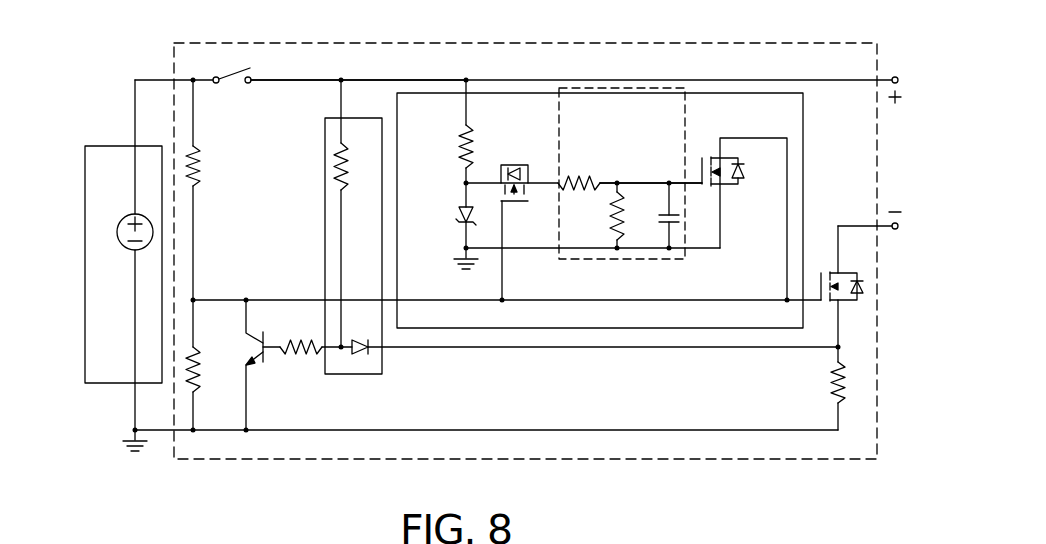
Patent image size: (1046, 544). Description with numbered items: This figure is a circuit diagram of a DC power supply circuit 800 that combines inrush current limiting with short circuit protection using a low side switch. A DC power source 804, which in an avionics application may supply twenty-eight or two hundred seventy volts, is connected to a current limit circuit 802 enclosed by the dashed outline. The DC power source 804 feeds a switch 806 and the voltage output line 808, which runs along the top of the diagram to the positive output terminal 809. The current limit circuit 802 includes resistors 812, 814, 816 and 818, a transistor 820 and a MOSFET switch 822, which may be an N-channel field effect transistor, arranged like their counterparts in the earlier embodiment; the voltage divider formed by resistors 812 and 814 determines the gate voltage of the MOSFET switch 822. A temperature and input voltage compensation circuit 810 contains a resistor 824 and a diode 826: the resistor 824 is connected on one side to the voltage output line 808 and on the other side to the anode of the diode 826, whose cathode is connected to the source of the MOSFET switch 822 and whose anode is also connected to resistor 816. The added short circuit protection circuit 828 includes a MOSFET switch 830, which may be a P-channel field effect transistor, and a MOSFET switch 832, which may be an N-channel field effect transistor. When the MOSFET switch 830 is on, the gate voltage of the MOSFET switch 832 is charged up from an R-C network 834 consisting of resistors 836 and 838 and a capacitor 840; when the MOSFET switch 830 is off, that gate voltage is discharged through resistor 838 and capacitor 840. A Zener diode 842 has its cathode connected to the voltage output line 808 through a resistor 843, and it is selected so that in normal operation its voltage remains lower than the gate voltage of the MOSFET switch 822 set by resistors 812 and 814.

The DC power supply circuit 800 is at (484, 225).
The current limit circuit 802 is at (838, 461).
The DC power source 804 is at (100, 146).
The switch 806 is at (233, 73).
The voltage output line 808 is at (382, 80).
The positive output terminal 809 is at (895, 77).
The temperature and input voltage compensation circuit 810 is at (325, 136).
The resistor 812 is at (193, 186).
The resistor 814 is at (190, 385).
The resistor 816 is at (287, 340).
The resistor 818 is at (830, 385).
The transistor 820 is at (265, 355).
The MOSFET switch 822 is at (835, 270).
The resistor 824 is at (334, 177).
The diode 826 is at (362, 355).
The short circuit protection circuit 828 is at (803, 157).
The MOSFET switch 830 is at (512, 162).
The MOSFET switch 832 is at (702, 170).
The R-C network 834 is at (687, 260).
The resistor 836 is at (602, 176).
The resistor 838 is at (617, 232).
The capacitor 840 is at (687, 217).
The Zener diode 842 is at (462, 212).
The resistor 843 is at (462, 130).